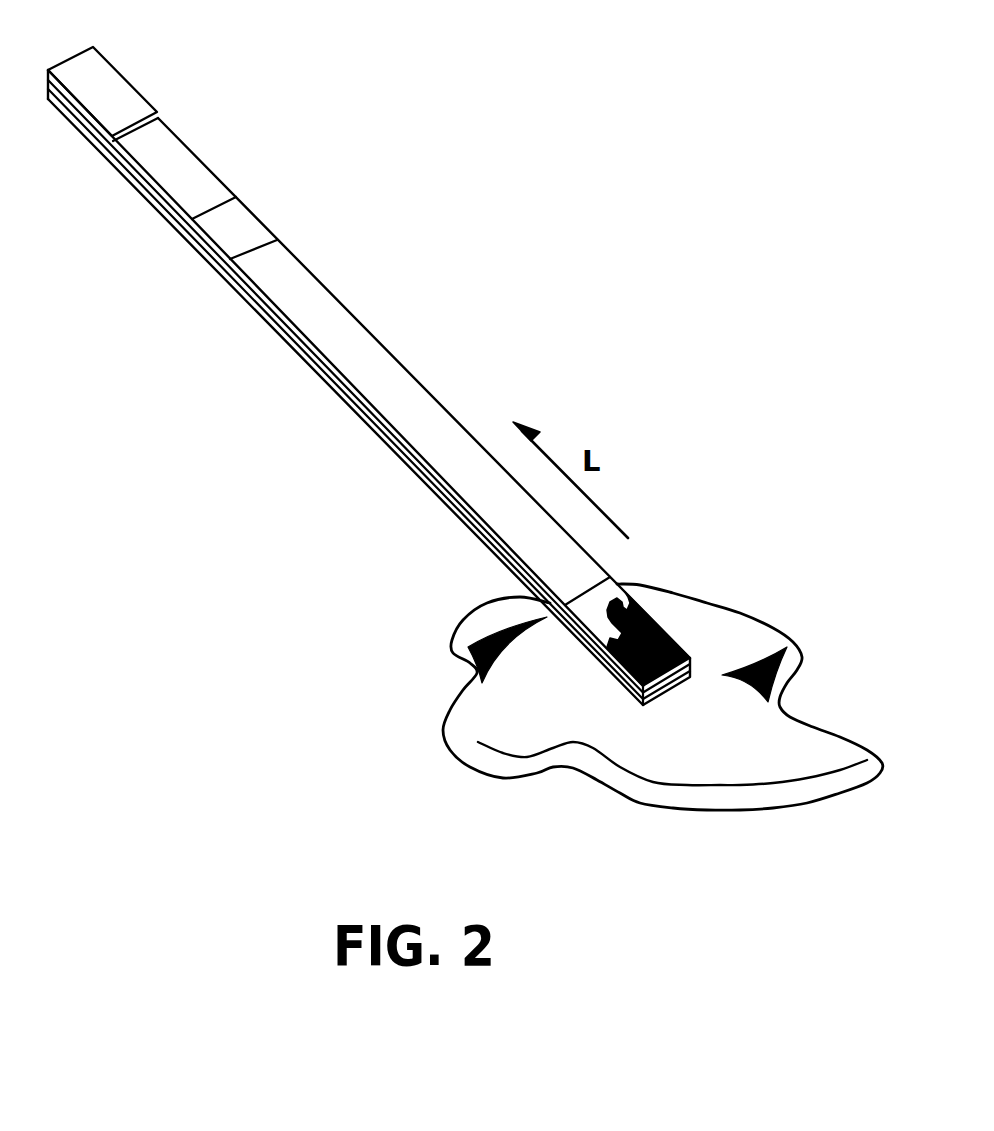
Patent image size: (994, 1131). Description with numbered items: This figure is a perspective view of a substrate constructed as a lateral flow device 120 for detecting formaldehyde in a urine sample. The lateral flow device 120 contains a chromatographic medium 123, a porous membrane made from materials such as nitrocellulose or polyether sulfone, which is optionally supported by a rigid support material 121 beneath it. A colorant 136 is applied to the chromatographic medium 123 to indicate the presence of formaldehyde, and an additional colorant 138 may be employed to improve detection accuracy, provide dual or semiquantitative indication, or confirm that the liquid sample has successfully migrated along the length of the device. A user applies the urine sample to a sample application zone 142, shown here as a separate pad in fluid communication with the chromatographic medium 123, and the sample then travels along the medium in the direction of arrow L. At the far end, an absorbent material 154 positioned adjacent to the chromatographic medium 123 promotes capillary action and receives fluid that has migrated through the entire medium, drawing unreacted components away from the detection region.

The lateral flow device 120 is at (391, 365).
The rigid support material 121 is at (362, 417).
The chromatographic medium 123 is at (428, 228).
The colorant 136 is at (263, 246).
The additional colorant 138 is at (216, 202).
The sample application zone 142 is at (622, 598).
The absorbent material 154 is at (110, 80).